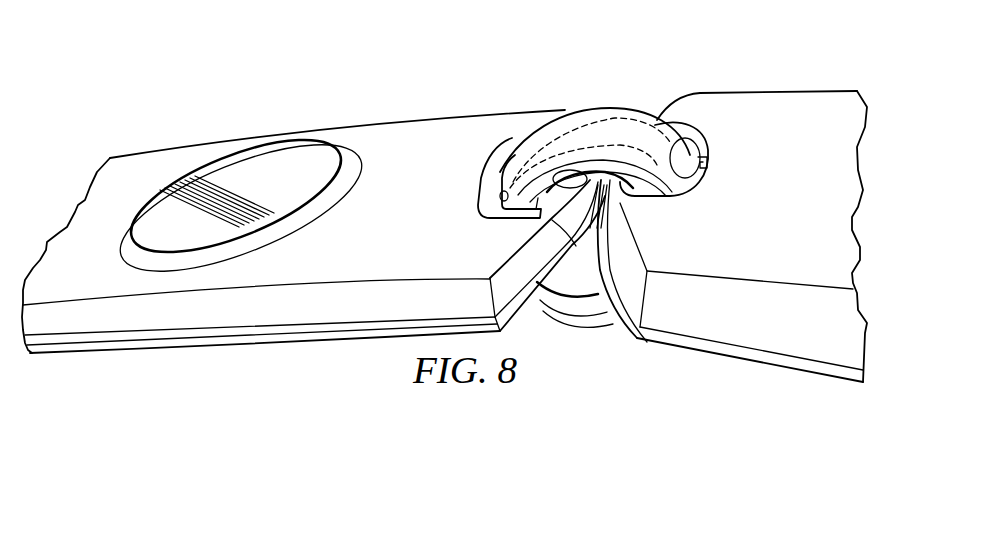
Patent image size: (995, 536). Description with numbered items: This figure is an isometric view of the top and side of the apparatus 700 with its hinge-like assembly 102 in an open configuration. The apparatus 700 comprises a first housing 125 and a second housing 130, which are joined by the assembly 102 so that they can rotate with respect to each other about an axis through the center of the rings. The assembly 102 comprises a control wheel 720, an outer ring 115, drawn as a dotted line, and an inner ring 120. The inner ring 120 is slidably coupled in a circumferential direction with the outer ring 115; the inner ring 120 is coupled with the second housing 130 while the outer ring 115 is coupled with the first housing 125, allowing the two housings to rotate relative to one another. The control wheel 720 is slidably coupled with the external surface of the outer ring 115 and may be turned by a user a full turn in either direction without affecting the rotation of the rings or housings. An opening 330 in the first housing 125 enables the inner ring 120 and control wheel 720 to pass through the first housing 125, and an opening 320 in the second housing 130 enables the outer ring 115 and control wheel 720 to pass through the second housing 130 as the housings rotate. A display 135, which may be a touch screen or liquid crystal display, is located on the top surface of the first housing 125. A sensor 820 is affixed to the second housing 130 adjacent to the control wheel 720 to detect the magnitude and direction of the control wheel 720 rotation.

The apparatus 700 is at (331, 69).
The assembly 102 is at (549, 102).
The control wheel 720 is at (600, 106).
The outer ring 115 is at (620, 134).
The opening 320 is at (683, 137).
The sensor 820 is at (699, 158).
The inner ring 120 is at (590, 176).
The opening 330 is at (500, 196).
The display 135 is at (240, 168).
The first housing 125 is at (320, 351).
The second housing 130 is at (747, 371).